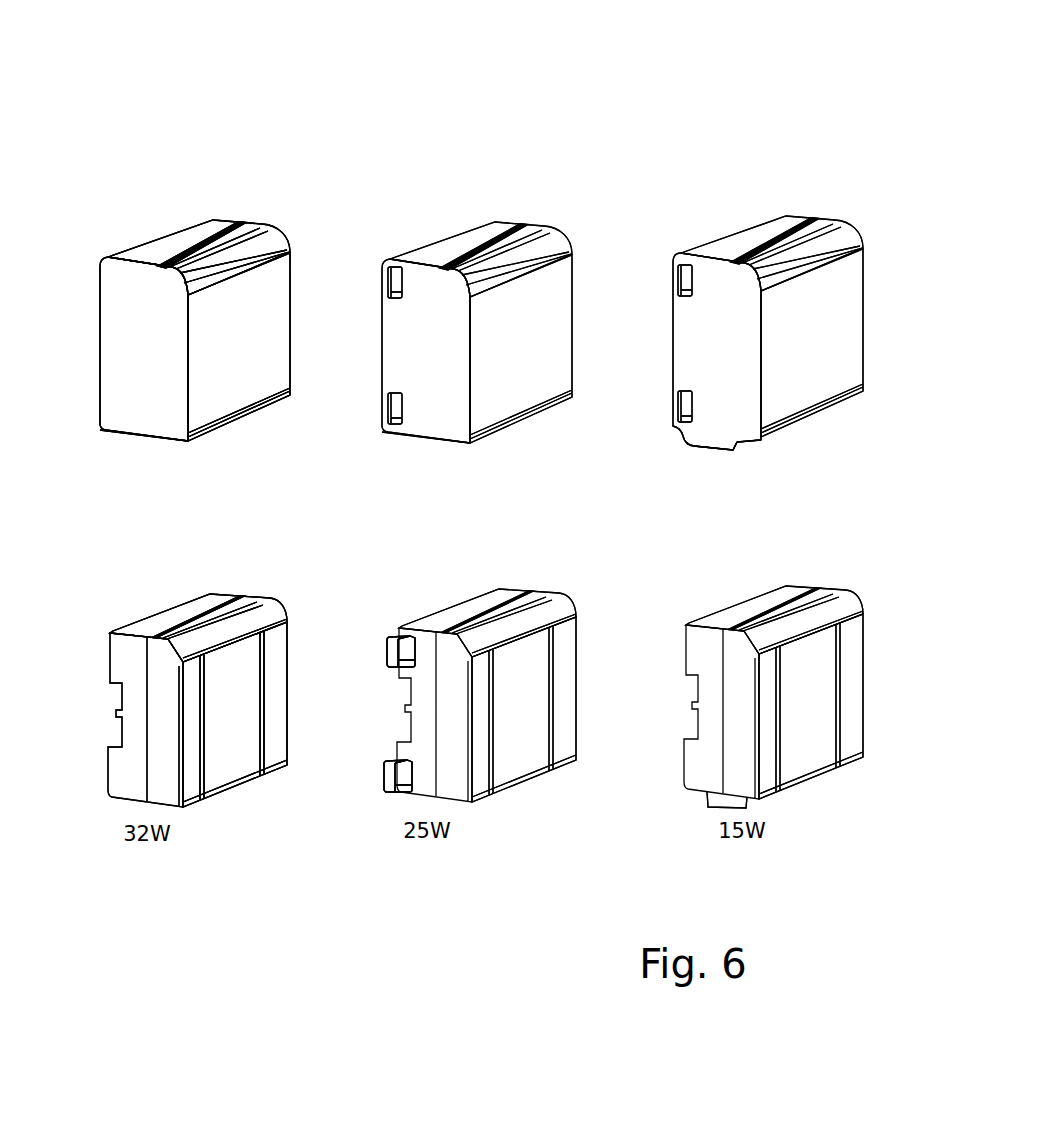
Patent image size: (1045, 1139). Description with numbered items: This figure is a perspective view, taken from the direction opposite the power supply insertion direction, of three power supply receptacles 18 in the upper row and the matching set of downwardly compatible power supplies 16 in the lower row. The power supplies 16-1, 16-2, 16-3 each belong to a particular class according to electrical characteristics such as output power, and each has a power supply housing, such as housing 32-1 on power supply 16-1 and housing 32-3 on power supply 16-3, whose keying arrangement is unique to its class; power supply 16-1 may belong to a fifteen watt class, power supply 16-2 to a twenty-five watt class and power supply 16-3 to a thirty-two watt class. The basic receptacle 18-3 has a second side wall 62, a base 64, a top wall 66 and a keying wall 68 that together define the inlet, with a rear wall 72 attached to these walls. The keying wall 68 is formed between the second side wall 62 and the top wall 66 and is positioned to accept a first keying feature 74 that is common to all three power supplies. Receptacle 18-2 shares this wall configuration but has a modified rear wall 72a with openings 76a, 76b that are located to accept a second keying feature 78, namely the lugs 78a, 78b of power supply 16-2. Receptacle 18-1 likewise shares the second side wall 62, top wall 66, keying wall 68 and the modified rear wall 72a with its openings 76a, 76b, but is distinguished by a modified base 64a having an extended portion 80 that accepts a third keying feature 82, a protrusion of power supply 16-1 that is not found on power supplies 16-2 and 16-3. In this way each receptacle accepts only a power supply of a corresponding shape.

The power supply 16 is at (91, 597).
The power supply 16-1 is at (743, 594).
The power supply 16-2 is at (458, 594).
The power supply 16-3 is at (171, 596).
The power supply receptacle 18 is at (113, 199).
The power supply receptacle 18-1 is at (864, 270).
The power supply receptacle 18-2 is at (573, 280).
The power supply receptacle 18-3 is at (291, 277).
The second side wall 62 is at (262, 365).
The base 64 is at (140, 438).
The modified base 64a is at (680, 437).
The top wall 66 is at (190, 224).
The keying wall 68 is at (262, 247).
The rear wall 72 is at (129, 366).
The modified rear wall 72a is at (417, 331).
The first keying feature 74 is at (264, 613).
The opening 76a is at (388, 283).
The opening 76b is at (385, 413).
The second keying feature 78 is at (387, 624).
The lug 78a is at (385, 656).
The lug 78b is at (385, 782).
The extended portion 80 is at (722, 452).
The third keying feature 82 is at (722, 802).
The power supply housing 32-1 is at (865, 643).
The power supply housing 32-3 is at (288, 647).